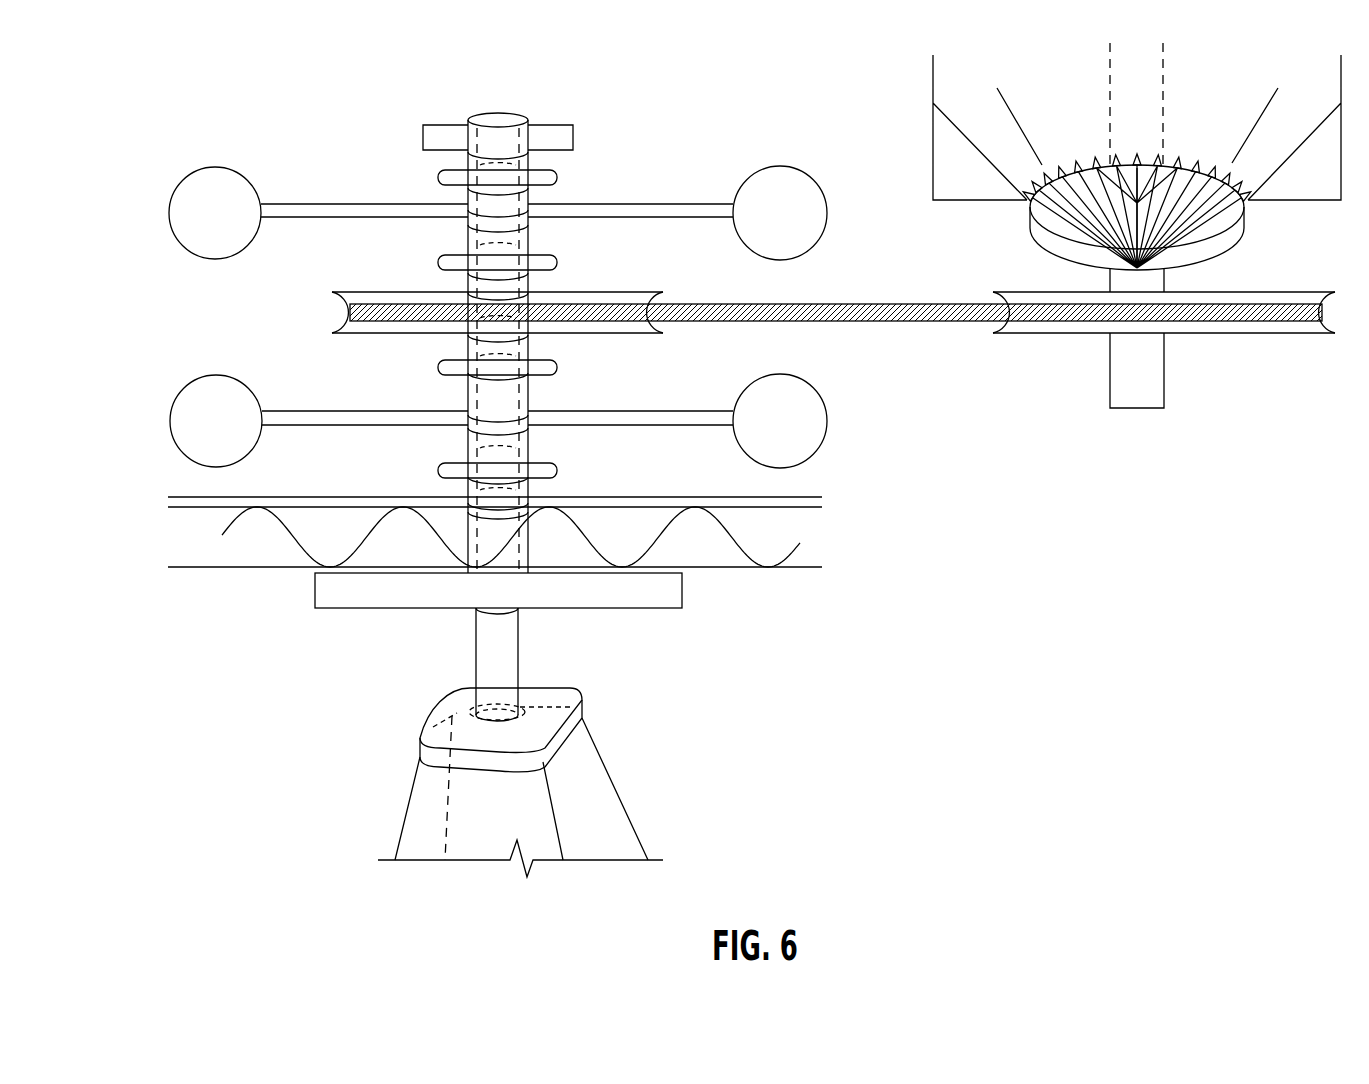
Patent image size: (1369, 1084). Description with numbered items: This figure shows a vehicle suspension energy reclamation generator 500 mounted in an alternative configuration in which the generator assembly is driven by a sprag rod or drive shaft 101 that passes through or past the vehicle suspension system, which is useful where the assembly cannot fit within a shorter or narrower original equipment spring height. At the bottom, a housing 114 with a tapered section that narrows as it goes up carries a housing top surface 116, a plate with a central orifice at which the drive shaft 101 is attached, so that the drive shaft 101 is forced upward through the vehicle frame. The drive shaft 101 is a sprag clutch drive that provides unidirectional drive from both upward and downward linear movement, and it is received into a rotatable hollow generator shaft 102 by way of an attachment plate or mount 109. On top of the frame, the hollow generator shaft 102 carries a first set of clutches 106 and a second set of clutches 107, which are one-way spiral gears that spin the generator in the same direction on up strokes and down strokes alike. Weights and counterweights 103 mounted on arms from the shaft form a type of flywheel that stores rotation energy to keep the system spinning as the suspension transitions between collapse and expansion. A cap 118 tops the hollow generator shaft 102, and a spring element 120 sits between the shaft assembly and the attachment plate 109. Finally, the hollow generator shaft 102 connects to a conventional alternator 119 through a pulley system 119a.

The vehicle suspension energy reclamation generator 500 is at (154, 80).
The drive shaft 101 is at (505, 648).
The hollow generator shaft 102 is at (527, 455).
The weights and counterweights 103 is at (192, 206).
The first set of clutches 106 is at (558, 178).
The second set of clutches 107 is at (558, 262).
The attachment plate 109 is at (313, 595).
The housing 114 is at (410, 795).
The housing top surface 116 is at (436, 750).
The cap 118 is at (573, 137).
The conventional alternator 119 is at (833, 336).
The pulley system 119a is at (930, 322).
The spring 120 is at (326, 520).